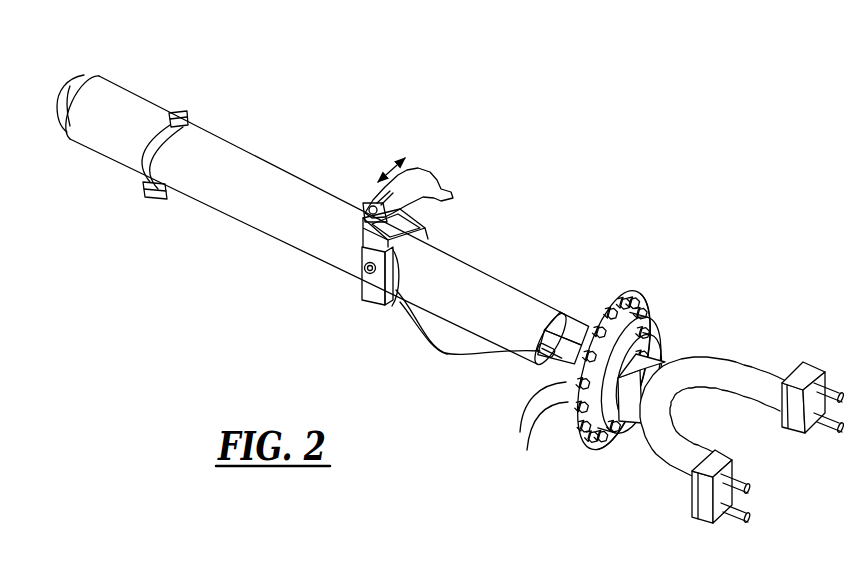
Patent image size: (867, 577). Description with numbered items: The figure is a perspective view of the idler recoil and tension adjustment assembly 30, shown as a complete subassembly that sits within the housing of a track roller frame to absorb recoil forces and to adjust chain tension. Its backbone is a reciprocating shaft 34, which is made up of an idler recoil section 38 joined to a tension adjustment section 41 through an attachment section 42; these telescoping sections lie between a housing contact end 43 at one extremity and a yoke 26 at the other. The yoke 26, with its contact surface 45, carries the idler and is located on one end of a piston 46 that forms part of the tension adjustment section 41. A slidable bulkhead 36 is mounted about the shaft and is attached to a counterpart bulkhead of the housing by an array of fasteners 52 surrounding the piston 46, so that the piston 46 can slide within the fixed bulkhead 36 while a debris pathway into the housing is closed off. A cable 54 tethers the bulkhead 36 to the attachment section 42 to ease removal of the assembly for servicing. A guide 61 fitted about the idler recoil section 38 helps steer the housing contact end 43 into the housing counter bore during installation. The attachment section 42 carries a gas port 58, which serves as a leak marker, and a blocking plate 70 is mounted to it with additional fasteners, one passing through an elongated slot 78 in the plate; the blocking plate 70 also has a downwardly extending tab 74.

The yoke 26 is at (750, 365).
The idler recoil and tension adjustment assembly 30 is at (505, 177).
The reciprocating shaft 34 is at (262, 163).
The slidable bulkhead 36 is at (641, 294).
The idler recoil section 38 is at (232, 131).
The tension adjustment section 41 is at (458, 253).
The attachment section 42 is at (370, 305).
The housing contact end 43 is at (68, 93).
The contact surface 45 is at (687, 390).
The piston 46 is at (575, 332).
The fasteners 52 is at (544, 433).
The cable 54 is at (482, 355).
The gas port 58 is at (364, 268).
The guide 61 is at (150, 155).
The blocking plate 70 is at (424, 171).
The downwardly extending tab 74 is at (370, 206).
The elongated slot 78 is at (425, 176).